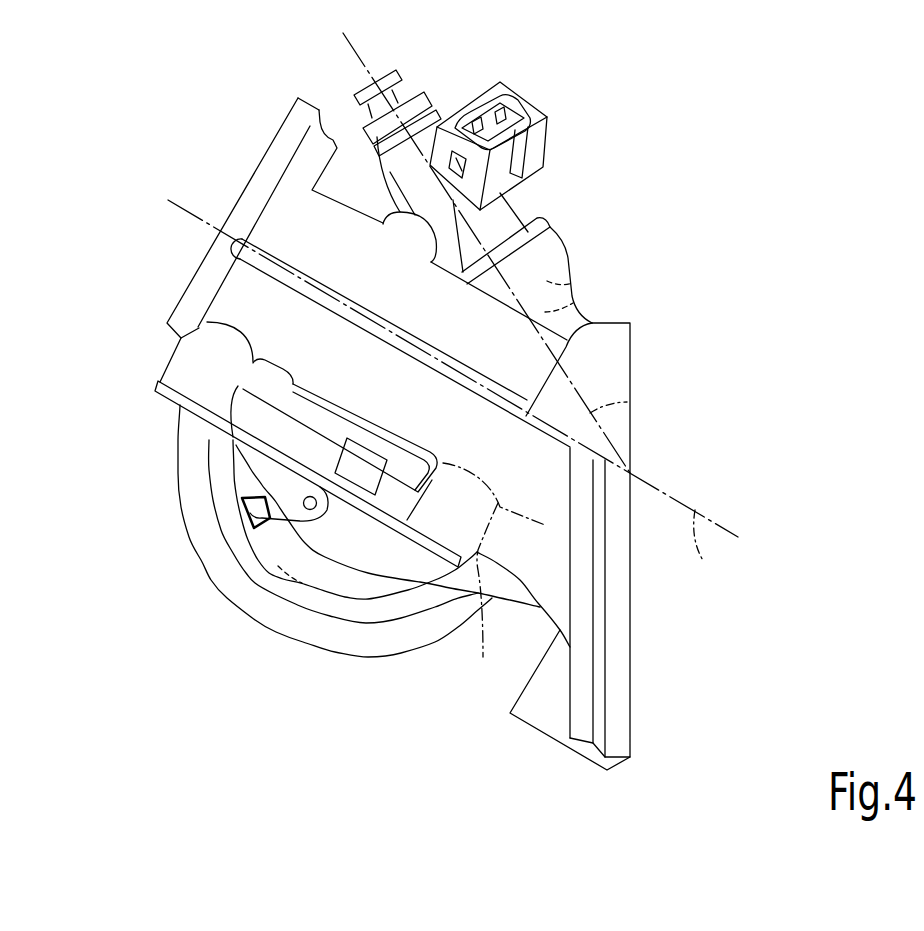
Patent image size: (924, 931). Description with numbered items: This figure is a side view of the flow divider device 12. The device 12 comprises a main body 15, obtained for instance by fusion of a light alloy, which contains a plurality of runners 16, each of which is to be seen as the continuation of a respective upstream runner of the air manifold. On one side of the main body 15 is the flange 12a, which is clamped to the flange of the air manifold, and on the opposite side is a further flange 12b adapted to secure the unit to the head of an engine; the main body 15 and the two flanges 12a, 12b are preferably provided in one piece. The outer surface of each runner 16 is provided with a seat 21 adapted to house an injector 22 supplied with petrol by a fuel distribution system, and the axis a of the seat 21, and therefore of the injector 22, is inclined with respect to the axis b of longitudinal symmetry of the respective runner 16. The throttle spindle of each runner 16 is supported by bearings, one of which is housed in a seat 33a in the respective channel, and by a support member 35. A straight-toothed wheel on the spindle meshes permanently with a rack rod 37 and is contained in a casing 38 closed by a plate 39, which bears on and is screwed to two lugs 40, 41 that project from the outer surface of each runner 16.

The flow divider device 12 is at (339, 125).
The flange 12a is at (283, 133).
The further flange 12b is at (627, 356).
The main body 15 is at (497, 360).
The runner 16 is at (410, 303).
The seat 21 is at (560, 253).
The injector 22 is at (430, 127).
The seat 33a is at (377, 137).
The support member 35 is at (217, 585).
The rack rod 37 is at (350, 482).
The casing 38 is at (296, 432).
The plate 39 is at (172, 398).
The lug 40 is at (187, 360).
The lug 41 is at (494, 574).
The axis of the seat a is at (645, 398).
The axis of longitudinal symmetry b is at (703, 550).